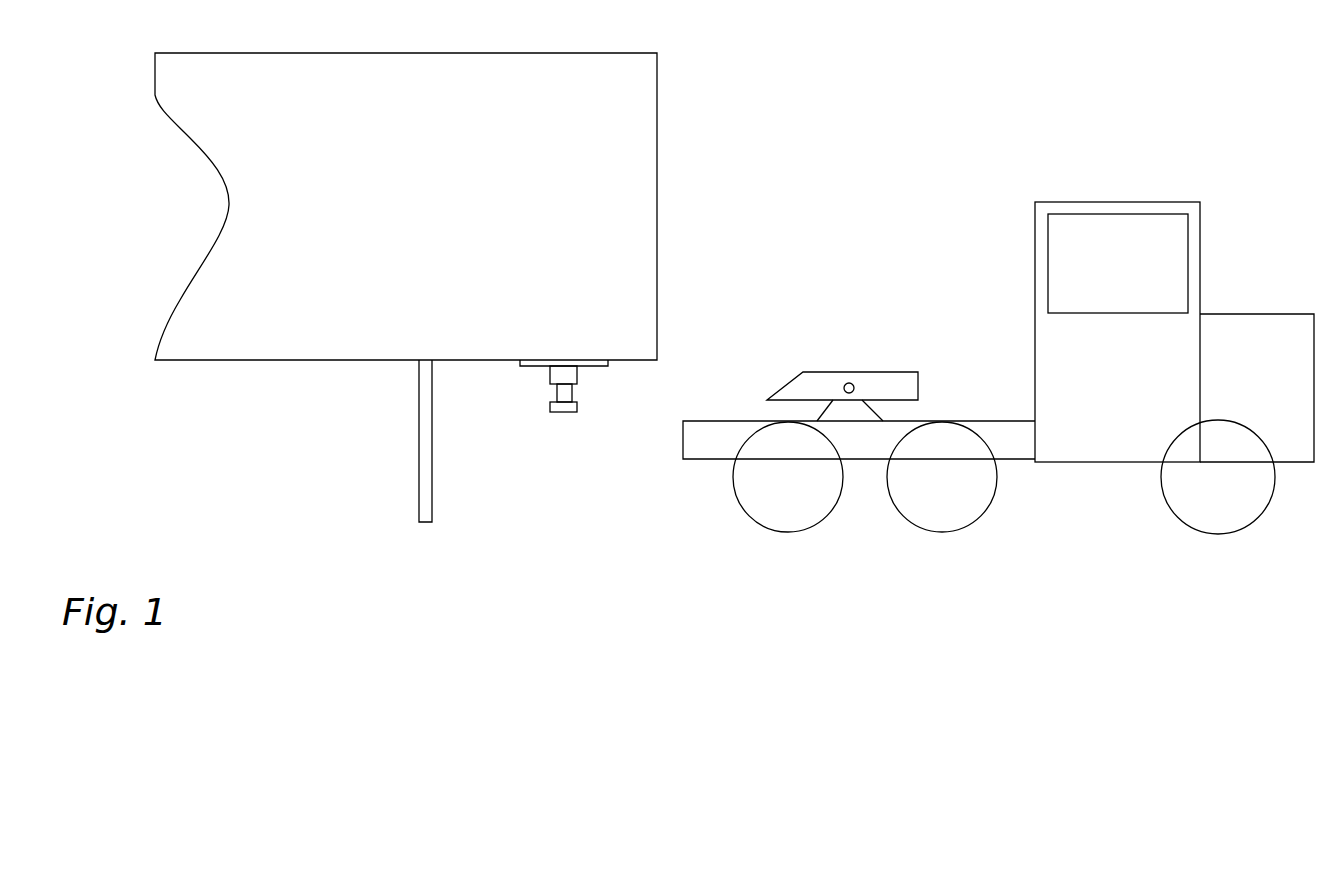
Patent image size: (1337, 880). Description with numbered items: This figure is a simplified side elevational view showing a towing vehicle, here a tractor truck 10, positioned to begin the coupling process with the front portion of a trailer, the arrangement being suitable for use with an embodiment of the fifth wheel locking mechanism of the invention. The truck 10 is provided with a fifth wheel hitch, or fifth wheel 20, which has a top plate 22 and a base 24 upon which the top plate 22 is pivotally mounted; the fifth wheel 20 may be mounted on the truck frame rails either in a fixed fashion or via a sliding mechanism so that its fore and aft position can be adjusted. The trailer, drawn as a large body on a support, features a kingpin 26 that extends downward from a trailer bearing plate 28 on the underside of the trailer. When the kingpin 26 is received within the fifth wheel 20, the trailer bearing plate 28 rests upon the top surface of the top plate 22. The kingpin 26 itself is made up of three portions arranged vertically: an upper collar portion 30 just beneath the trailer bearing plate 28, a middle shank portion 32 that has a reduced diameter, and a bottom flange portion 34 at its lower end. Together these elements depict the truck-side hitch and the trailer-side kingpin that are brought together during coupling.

The tractor truck 10 is at (1138, 150).
The fifth wheel 20 is at (855, 324).
The top plate 22 is at (832, 372).
The base 24 is at (880, 412).
The kingpin 26 is at (519, 433).
The trailer bearing plate 28 is at (608, 364).
The upper collar portion 30 is at (548, 372).
The middle shank portion 32 is at (575, 393).
The bottom flange portion 34 is at (563, 412).